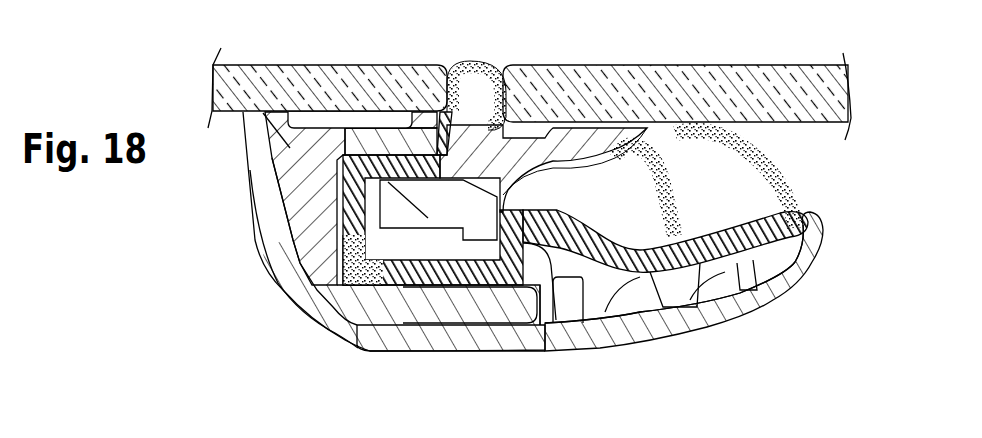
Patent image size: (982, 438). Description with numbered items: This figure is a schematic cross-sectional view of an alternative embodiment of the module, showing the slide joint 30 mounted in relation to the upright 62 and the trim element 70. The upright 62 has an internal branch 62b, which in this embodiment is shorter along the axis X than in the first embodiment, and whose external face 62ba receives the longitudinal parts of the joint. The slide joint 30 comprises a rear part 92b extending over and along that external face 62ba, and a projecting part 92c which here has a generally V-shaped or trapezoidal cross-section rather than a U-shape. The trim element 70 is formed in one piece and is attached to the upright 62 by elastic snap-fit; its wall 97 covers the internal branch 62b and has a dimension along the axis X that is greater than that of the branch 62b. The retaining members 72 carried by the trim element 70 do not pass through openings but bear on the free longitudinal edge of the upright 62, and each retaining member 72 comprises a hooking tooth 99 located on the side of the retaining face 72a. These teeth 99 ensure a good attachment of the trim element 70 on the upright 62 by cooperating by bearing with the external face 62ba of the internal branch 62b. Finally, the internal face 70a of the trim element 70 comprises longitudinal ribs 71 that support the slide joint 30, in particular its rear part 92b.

The slide joint 30 is at (802, 195).
The upright 62 is at (313, 327).
The internal branch 62b is at (312, 323).
The external face of the internal branch 62ba is at (470, 290).
The trim element 70 is at (775, 325).
The internal face of the trim element 70a is at (603, 306).
The longitudinal ribs 71 is at (757, 262).
The retaining members 72 is at (612, 290).
The retaining faces 72a is at (567, 214).
The rear part 92b is at (720, 235).
The projecting part 92c is at (607, 152).
The wall 97 is at (500, 337).
The hooking tooth 99 is at (536, 330).